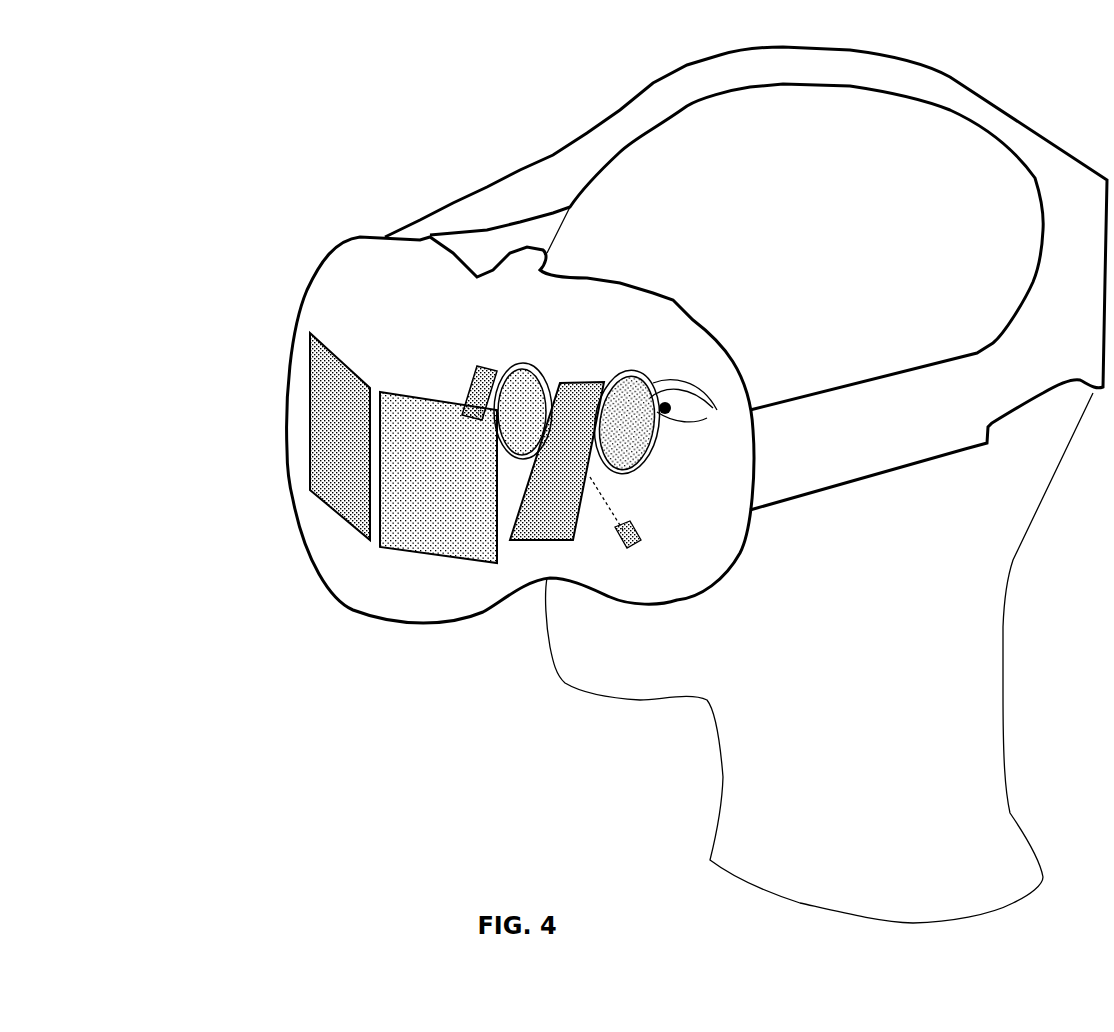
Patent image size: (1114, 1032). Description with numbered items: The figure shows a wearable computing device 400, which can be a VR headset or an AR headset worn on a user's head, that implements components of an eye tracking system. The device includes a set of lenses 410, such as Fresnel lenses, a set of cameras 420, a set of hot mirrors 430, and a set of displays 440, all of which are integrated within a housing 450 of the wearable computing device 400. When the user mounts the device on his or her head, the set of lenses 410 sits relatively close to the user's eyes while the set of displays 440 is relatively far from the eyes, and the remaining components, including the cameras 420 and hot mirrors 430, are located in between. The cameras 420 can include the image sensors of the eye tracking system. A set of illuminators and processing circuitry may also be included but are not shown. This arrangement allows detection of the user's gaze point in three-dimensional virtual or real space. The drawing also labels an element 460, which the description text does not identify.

The wearable computing device 400 is at (222, 142).
The set of lenses 410 is at (643, 467).
The set of cameras 420 is at (640, 550).
The set of hot mirrors 430 is at (580, 383).
The set of displays 440 is at (343, 540).
The housing 450 is at (320, 295).
The display 460 is at (310, 490).